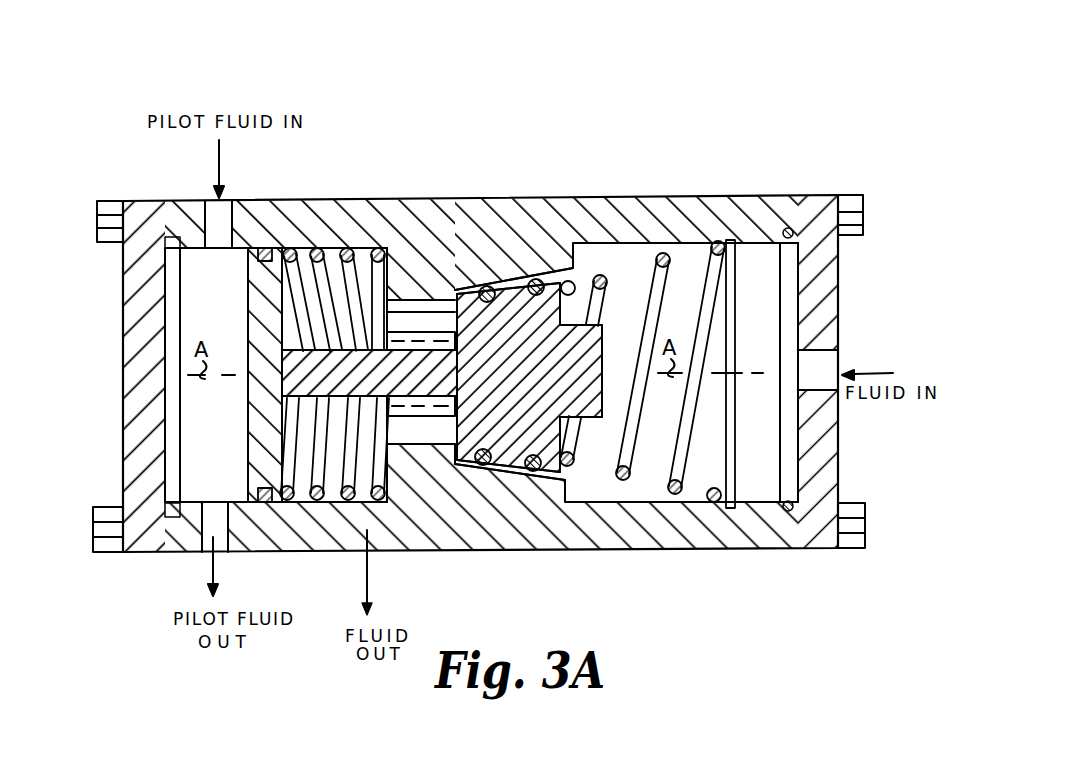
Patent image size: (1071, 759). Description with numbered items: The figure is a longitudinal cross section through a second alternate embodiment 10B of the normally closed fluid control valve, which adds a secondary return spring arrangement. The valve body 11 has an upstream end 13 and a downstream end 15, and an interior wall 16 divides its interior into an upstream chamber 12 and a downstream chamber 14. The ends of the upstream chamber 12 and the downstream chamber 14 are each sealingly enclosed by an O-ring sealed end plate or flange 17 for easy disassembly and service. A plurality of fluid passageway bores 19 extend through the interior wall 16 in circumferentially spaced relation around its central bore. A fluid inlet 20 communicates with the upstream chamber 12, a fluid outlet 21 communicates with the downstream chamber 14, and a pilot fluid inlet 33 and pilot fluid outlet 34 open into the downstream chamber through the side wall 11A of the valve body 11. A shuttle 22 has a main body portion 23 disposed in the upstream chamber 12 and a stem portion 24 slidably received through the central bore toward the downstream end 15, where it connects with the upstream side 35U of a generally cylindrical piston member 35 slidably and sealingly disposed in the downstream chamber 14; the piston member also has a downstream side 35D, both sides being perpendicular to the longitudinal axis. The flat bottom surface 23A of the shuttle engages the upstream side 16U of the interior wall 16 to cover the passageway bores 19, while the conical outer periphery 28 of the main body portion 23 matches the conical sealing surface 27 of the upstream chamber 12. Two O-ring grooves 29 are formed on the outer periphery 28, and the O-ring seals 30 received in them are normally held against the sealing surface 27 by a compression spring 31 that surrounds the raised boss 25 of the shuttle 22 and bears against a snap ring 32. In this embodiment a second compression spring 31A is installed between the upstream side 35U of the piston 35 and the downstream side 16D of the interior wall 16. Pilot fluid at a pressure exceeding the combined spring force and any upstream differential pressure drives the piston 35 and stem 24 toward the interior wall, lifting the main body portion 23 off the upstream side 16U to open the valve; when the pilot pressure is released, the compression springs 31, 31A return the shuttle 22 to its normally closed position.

The valve assembly 10B is at (738, 147).
The valve body 11 is at (693, 537).
The side wall 11A is at (630, 537).
The upstream chamber 12 is at (774, 450).
The upstream end 13 is at (853, 299).
The downstream chamber 14 is at (227, 309).
The downstream end 15 is at (98, 334).
The interior wall 16 is at (383, 197).
The upstream side of the interior wall 16U is at (445, 462).
The downstream side of the interior wall 16D is at (392, 460).
The end plate or flange 17 is at (122, 461).
The fluid passageway bores 19 is at (392, 318).
The fluid inlet 20 is at (838, 355).
The fluid outlet 21 is at (360, 530).
The shuttle 22 is at (579, 306).
The main body portion 23 is at (529, 377).
The flat bottom surface 23A is at (458, 292).
The stem portion 24 is at (369, 373).
The raised boss 25 is at (606, 352).
The conical sealing surface 27 is at (513, 288).
The conical outer periphery 28 is at (527, 472).
The O-ring groove 29 is at (488, 466).
The O-ring seals 30 is at (535, 480).
The compression spring 31 is at (665, 252).
The second compression spring 31A is at (400, 280).
The snap ring 32 is at (731, 250).
The pilot fluid inlet 33 is at (232, 200).
The pilot fluid outlet 34 is at (227, 552).
The piston member 35 is at (258, 440).
The upstream side of the piston member 35U is at (283, 295).
The downstream side of the piston member 35D is at (243, 412).